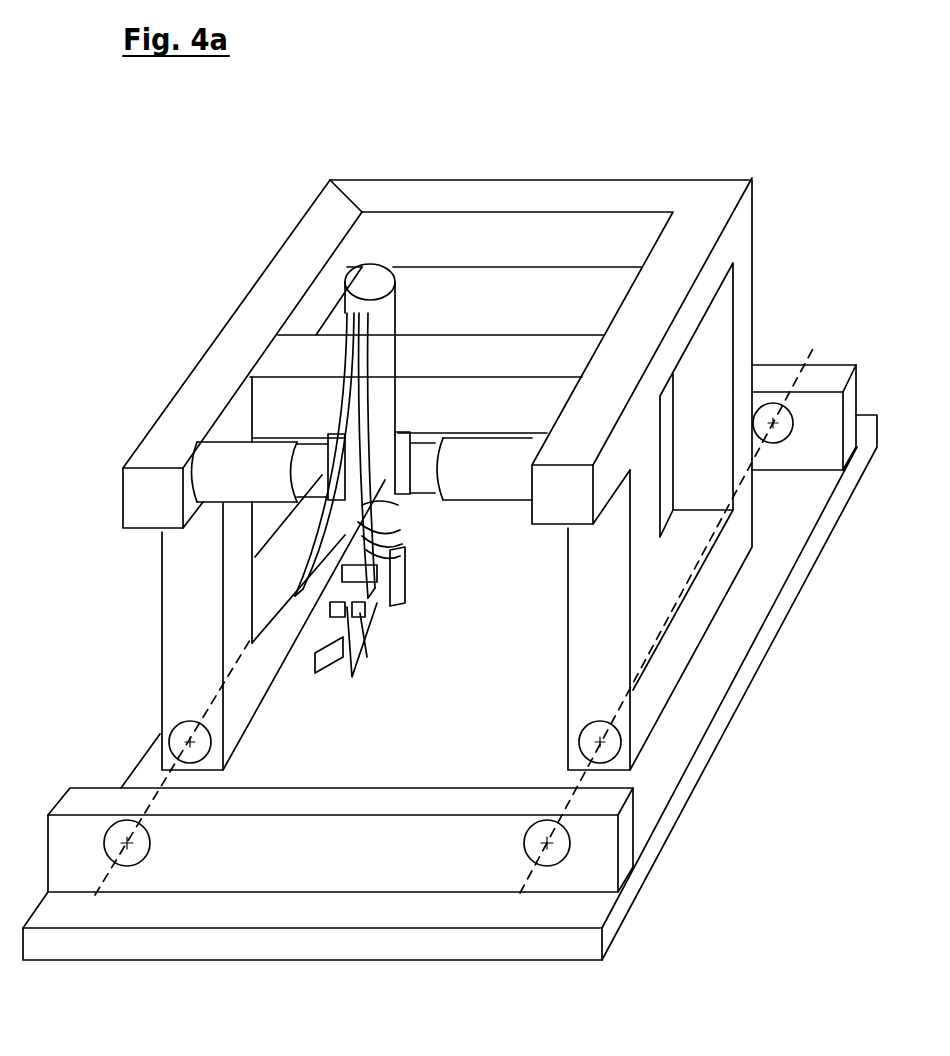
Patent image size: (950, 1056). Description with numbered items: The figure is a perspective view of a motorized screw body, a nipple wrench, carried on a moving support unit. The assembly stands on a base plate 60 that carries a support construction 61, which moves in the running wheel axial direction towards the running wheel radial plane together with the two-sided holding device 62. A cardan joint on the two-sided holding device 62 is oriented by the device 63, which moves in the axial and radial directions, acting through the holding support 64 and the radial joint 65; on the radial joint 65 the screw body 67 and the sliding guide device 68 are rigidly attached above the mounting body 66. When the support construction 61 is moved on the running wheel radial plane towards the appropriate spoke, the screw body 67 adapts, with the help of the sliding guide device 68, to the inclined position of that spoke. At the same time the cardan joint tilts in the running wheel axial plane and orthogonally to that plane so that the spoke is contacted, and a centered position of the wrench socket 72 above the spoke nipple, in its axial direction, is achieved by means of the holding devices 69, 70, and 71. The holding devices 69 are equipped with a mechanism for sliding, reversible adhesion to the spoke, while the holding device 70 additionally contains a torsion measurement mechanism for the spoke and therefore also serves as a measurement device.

The base plate 60 is at (568, 912).
The support construction 61 is at (750, 136).
The two-sided holding device 62 is at (475, 432).
The device moving in the axial and radial directions 63 is at (302, 462).
The holding support 64 is at (392, 497).
The radial joint 65 is at (290, 495).
The mounting body 66 is at (363, 278).
The screw body 67 is at (413, 573).
The sliding guide device 68 is at (342, 571).
The holding devices 69 is at (362, 313).
The holding device 70 is at (330, 609).
The holding device 71 is at (362, 650).
The wrench socket 72 is at (323, 653).